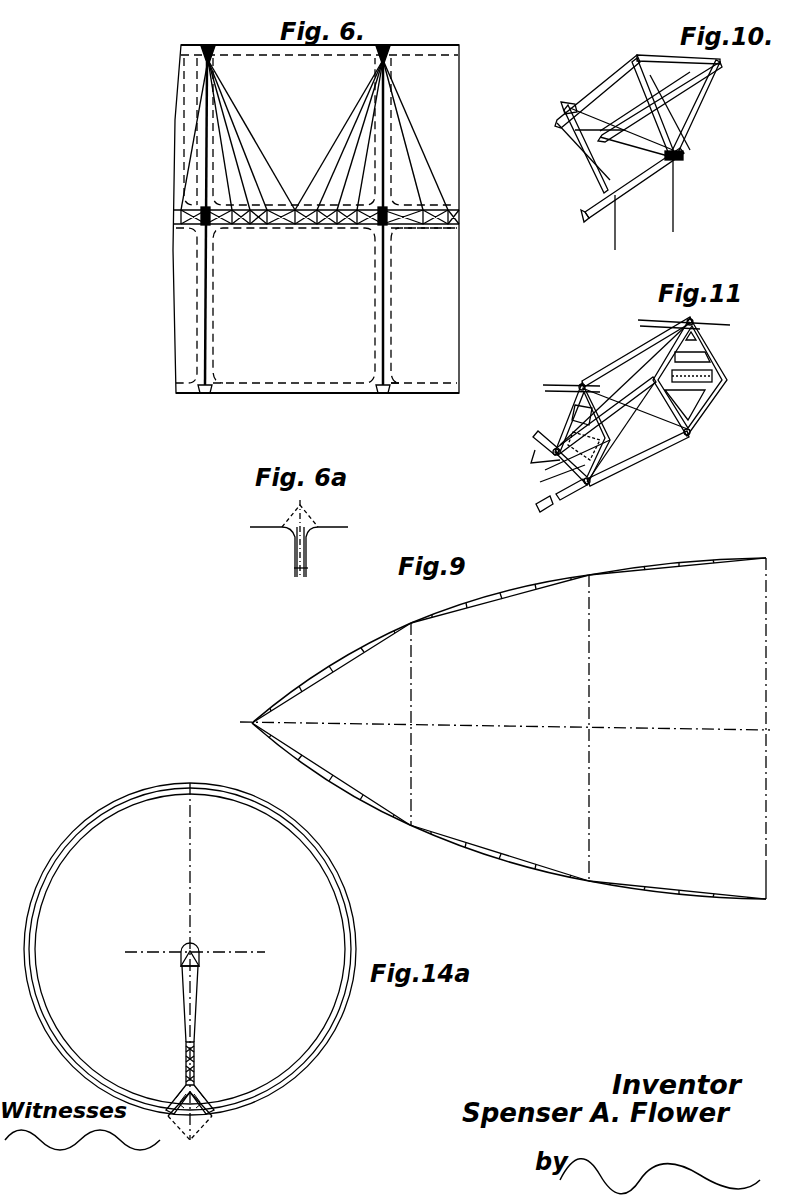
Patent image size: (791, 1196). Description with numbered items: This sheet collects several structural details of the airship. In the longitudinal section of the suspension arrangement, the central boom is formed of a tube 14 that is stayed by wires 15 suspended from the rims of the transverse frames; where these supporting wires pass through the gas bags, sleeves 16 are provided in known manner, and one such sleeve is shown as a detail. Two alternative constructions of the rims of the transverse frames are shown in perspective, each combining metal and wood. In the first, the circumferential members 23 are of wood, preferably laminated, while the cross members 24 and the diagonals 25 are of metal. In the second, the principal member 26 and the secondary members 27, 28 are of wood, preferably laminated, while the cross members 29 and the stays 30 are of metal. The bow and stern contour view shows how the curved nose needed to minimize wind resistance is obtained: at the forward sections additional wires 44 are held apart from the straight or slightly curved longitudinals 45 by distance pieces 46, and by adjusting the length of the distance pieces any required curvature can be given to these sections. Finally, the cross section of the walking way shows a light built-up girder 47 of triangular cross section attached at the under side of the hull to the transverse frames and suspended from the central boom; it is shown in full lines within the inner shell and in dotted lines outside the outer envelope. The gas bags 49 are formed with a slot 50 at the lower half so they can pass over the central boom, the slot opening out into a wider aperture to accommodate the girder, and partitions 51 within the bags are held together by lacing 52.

In FIG. 6, the tube 14 is at (358, 226).
In FIG. 6, the wires 15 is at (238, 150).
In FIG. 6A, the sleeves 16 is at (306, 560).
In FIG. 10, the circumferential members 23 is at (625, 82).
In FIG. 10, the cross members 24 is at (694, 108).
In FIG. 10, the diagonals 25 is at (666, 128).
In FIG. 11, the principal member 26 is at (656, 430).
In FIG. 11, the secondary members 27 is at (647, 470).
In FIG. 11, the secondary members 28 is at (602, 380).
In FIG. 11, the cross members 29 is at (706, 352).
In FIG. 11, the stays 30 is at (632, 385).
In FIG. 9, the additional wires 44 is at (480, 600).
In FIG. 9, the longitudinals 45 is at (520, 598).
In FIG. 9, the distance pieces 46 is at (326, 676).
In FIG. 14A, the built-up girder 47 is at (208, 1100).
In FIG. 14A, the gas bags 49 is at (108, 1082).
In FIG. 14A, the slot 50 is at (183, 975).
In FIG. 14A, the partitions 51 is at (205, 1031).
In FIG. 14A, the lacing 52 is at (186, 1068).